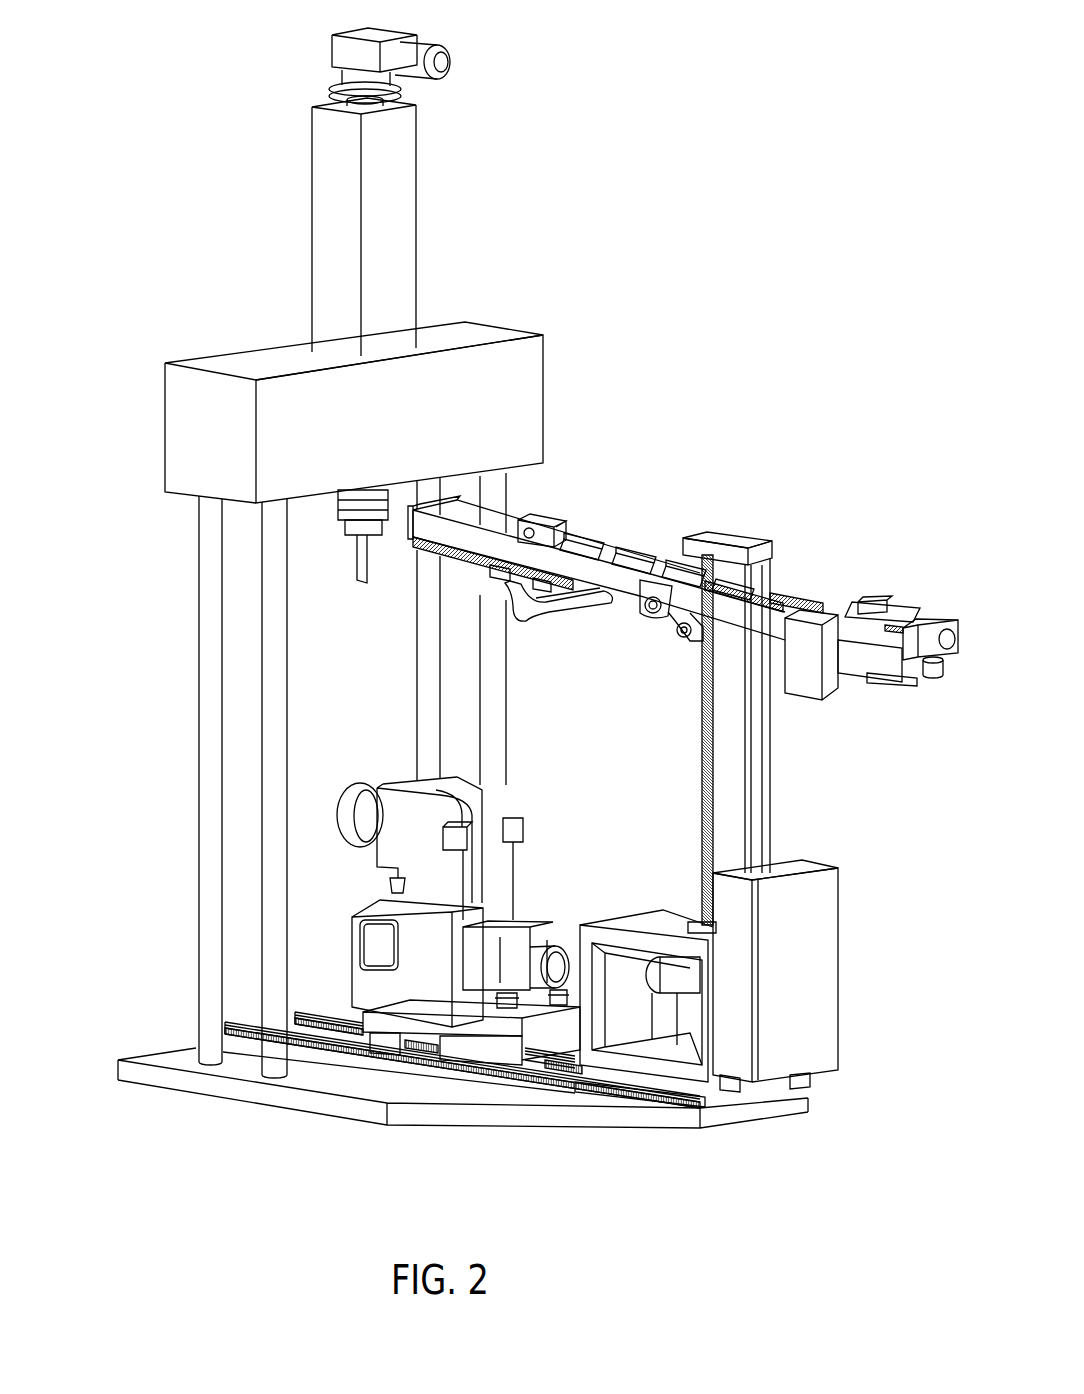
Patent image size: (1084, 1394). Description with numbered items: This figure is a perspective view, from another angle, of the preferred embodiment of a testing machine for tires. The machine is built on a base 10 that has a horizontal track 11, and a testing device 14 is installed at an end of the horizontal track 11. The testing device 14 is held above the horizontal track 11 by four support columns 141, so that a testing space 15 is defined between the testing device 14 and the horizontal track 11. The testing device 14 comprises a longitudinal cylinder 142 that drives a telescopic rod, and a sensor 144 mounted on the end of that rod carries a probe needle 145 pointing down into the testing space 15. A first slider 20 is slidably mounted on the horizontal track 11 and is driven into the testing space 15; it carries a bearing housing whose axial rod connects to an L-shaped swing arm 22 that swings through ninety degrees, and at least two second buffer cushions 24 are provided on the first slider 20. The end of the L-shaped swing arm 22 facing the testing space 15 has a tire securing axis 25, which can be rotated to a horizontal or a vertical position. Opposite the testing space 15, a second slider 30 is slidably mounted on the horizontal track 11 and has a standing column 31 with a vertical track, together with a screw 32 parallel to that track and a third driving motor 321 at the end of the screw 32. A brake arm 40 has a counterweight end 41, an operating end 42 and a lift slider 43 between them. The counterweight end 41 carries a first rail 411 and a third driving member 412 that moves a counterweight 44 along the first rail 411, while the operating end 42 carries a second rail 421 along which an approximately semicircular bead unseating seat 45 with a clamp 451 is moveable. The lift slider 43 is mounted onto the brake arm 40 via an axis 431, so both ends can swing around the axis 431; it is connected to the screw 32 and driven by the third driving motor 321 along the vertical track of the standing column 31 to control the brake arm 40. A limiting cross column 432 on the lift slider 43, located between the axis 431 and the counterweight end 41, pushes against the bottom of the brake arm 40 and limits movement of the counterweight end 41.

The base 10 is at (485, 1119).
The horizontal track 11 is at (750, 1112).
The testing device 14 is at (262, 355).
The support columns 141 is at (210, 742).
The longitudinal cylinder 142 is at (400, 233).
The sensor 144 is at (340, 513).
The probe needle 145 is at (360, 565).
The testing space 15 is at (322, 703).
The first slider 20 is at (330, 968).
The L-shaped swing arm 22 is at (392, 850).
The second buffer cushions 24 is at (560, 1008).
The tire securing axis 25 is at (345, 808).
The second slider 30 is at (625, 897).
The standing column 31 is at (748, 760).
The screw 32 is at (706, 797).
The third driving motor 321 is at (690, 975).
The brake arm 40 is at (648, 525).
The counterweight end 41 is at (890, 660).
The first rail 411 is at (745, 600).
The third driving member 412 is at (800, 612).
The operating end 42 is at (440, 528).
The second rail 421 is at (448, 556).
The lift slider 43 is at (653, 622).
The axis 431 is at (643, 607).
The limiting cross column 432 is at (681, 640).
The counterweight 44 is at (838, 605).
The bead unseating seat 45 is at (510, 615).
The clamp 451 is at (540, 520).